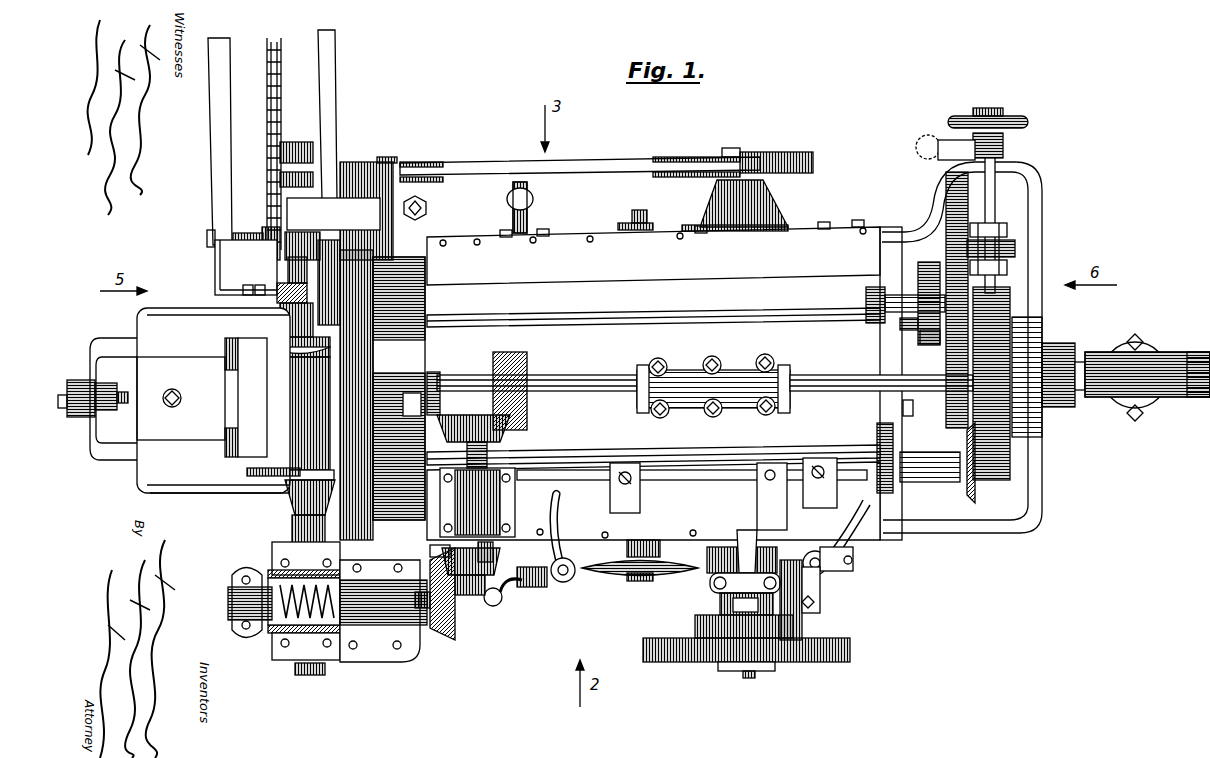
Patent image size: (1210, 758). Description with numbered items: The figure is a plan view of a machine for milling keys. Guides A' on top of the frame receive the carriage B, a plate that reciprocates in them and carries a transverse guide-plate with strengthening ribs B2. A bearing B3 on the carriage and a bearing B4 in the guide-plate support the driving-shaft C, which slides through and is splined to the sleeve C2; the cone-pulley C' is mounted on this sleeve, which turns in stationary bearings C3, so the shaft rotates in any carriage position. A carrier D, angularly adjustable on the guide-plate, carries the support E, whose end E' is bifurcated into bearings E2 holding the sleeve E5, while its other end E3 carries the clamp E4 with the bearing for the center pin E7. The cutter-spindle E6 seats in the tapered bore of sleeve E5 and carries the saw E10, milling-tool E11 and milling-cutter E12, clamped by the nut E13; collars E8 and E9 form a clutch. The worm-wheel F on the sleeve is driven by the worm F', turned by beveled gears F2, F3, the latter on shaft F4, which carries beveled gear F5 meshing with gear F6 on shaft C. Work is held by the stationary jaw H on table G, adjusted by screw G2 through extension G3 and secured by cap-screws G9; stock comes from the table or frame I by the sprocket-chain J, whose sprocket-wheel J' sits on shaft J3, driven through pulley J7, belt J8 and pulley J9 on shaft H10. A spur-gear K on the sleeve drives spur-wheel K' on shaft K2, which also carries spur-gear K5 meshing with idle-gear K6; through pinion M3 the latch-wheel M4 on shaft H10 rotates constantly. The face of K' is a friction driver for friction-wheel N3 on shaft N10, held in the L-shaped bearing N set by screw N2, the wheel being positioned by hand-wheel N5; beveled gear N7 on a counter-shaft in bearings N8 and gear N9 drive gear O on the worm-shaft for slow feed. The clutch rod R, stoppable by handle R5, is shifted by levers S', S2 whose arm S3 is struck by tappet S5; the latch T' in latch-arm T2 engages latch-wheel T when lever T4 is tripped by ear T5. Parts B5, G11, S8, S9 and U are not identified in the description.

The table or frame I is at (209, 61).
The chain J is at (261, 144).
The sprocket-wheel J' is at (259, 231).
The shaft J3 is at (207, 238).
The belt wheel or pulley J7 is at (440, 162).
The belt J8 is at (590, 165).
The pulley J9 is at (673, 157).
The shaft H10 is at (790, 145).
The center pin E7 is at (303, 145).
The extended end of support E3 is at (362, 162).
The clamp E4 is at (333, 214).
The cutter-spindle E6 is at (272, 280).
The nut E13 is at (292, 293).
The milling-tool E11 is at (296, 320).
The milling-cutter E12 is at (273, 340).
The extended end of support E' is at (312, 454).
The support E is at (356, 395).
The carrier D is at (399, 388).
The bearing B5 is at (412, 410).
The table G is at (190, 400).
The stationary jaw H is at (238, 401).
The extension of bracket G3 is at (78, 380).
The screw G2 is at (105, 383).
The saw E10 is at (247, 472).
The housing base G11 is at (190, 493).
The collar E9 is at (290, 497).
The collar E8 is at (292, 532).
The worm-wheel F is at (284, 601).
The worm F' is at (251, 620).
The bearings E2 is at (385, 611).
The sleeve E5 is at (318, 676).
The beveled gear F2 is at (445, 628).
The beveled gear F3 is at (490, 576).
The handle R5 is at (500, 600).
The guides A' is at (664, 386).
The rod R is at (533, 204).
The cap-screw or bolts G9 is at (428, 223).
The strengthening ribs or braces B2 is at (478, 318).
The carriage B is at (537, 366).
The bearing B4 is at (437, 372).
The beveled gear F5 is at (462, 413).
The beveled gear F6 is at (527, 370).
The shaft F4 is at (512, 440).
The bearing B3 is at (713, 386).
The driving-shaft C is at (881, 369).
The arm S3 is at (562, 515).
The tappet S5 is at (632, 505).
The break-joint ear T5 is at (757, 505).
The lever T4 is at (737, 537).
The stop block S8 is at (820, 483).
The lever S9 is at (849, 530).
The lever S2 is at (828, 572).
The lever S' is at (546, 582).
The cam U is at (640, 572).
The latch T' is at (741, 605).
The latch-wheel T is at (809, 600).
The pinion M3 is at (850, 634).
The latch-wheel M4 is at (827, 650).
The latch-arm T2 is at (764, 648).
The spur-wheel K' is at (942, 300).
The spur-gear K5 is at (918, 287).
The shaft K2 is at (905, 328).
The idle-gear K6 is at (925, 344).
The spur-gear K is at (905, 352).
The gear O is at (909, 420).
The bearing N is at (1003, 148).
The shaft N10 is at (997, 200).
The hand-wheel N5 is at (962, 116).
The screw N2 is at (916, 146).
The friction-wheel N3 is at (1015, 248).
The cone-pulley C' is at (1020, 383).
The beveled gear N7 is at (976, 490).
The bearings N8 is at (930, 467).
The gear N9 is at (893, 490).
The sleeve C2 is at (1083, 398).
The stationary bearings C3 is at (1158, 350).